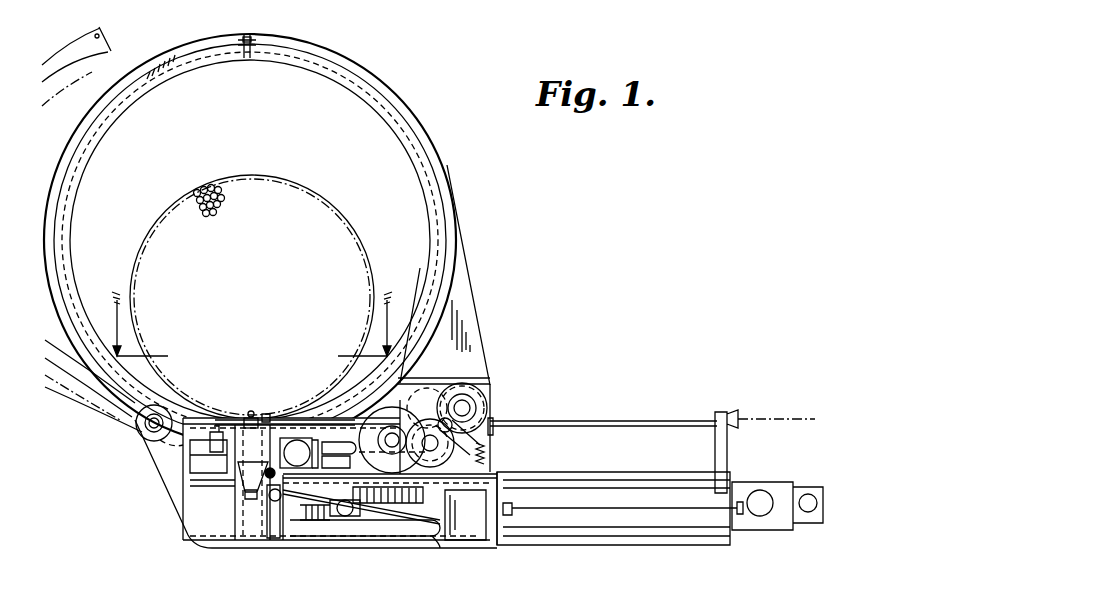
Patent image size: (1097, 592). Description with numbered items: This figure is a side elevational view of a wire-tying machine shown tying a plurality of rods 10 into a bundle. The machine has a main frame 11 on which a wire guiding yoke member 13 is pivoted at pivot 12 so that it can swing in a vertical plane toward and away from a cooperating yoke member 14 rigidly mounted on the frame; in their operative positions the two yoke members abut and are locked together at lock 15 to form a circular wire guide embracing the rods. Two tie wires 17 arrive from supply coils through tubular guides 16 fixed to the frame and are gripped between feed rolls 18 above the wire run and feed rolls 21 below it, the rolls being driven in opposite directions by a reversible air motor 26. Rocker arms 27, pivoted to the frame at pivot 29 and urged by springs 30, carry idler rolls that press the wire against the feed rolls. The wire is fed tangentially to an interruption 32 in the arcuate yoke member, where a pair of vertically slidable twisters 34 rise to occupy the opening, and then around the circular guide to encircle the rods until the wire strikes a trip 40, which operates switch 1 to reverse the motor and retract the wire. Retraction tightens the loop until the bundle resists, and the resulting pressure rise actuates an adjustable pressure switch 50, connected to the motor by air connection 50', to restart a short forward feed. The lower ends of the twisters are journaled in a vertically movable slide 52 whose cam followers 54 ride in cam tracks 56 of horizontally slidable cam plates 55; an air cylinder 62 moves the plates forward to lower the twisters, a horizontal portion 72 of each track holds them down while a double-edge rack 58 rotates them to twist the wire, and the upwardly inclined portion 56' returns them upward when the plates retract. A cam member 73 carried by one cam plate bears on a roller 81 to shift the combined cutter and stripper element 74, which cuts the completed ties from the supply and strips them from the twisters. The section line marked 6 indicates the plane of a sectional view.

The switch 1 is at (198, 464).
The section line 6- 6 is at (251, 324).
The rods 10 is at (222, 200).
The main frame 11 is at (174, 491).
The pivot 12 is at (146, 426).
The wire guiding yoke member 13 is at (158, 75).
The cooperating yoke member 14 is at (384, 96).
The lock 15 is at (246, 48).
The tubular guides 16 is at (663, 423).
The tie wires 17 is at (770, 419).
The feed rolls 18 is at (485, 398).
The feed rolls 21 is at (478, 432).
The air motor 26 is at (400, 410).
The rocker arms 27 is at (448, 400).
The pivot 29 is at (470, 412).
The springs 30 is at (490, 456).
The interruption 32 is at (267, 414).
The twisters 34 is at (249, 416).
The trip 40 is at (216, 430).
The adjustable pressure switch 50 is at (291, 416).
The air connection 50' is at (307, 424).
The slide 52 is at (274, 528).
The cam follower 54 is at (300, 530).
The cam plates 55 is at (412, 530).
The cam track 56 is at (450, 546).
The upwardly inclined portion 56' is at (330, 502).
The double-edge rack 58 is at (335, 512).
The air cylinder 62 is at (612, 486).
The horizontal portion 72 is at (440, 522).
The cam member 73 is at (378, 512).
The combined cutter and stripper element 74 is at (250, 470).
The roller 81 is at (248, 495).